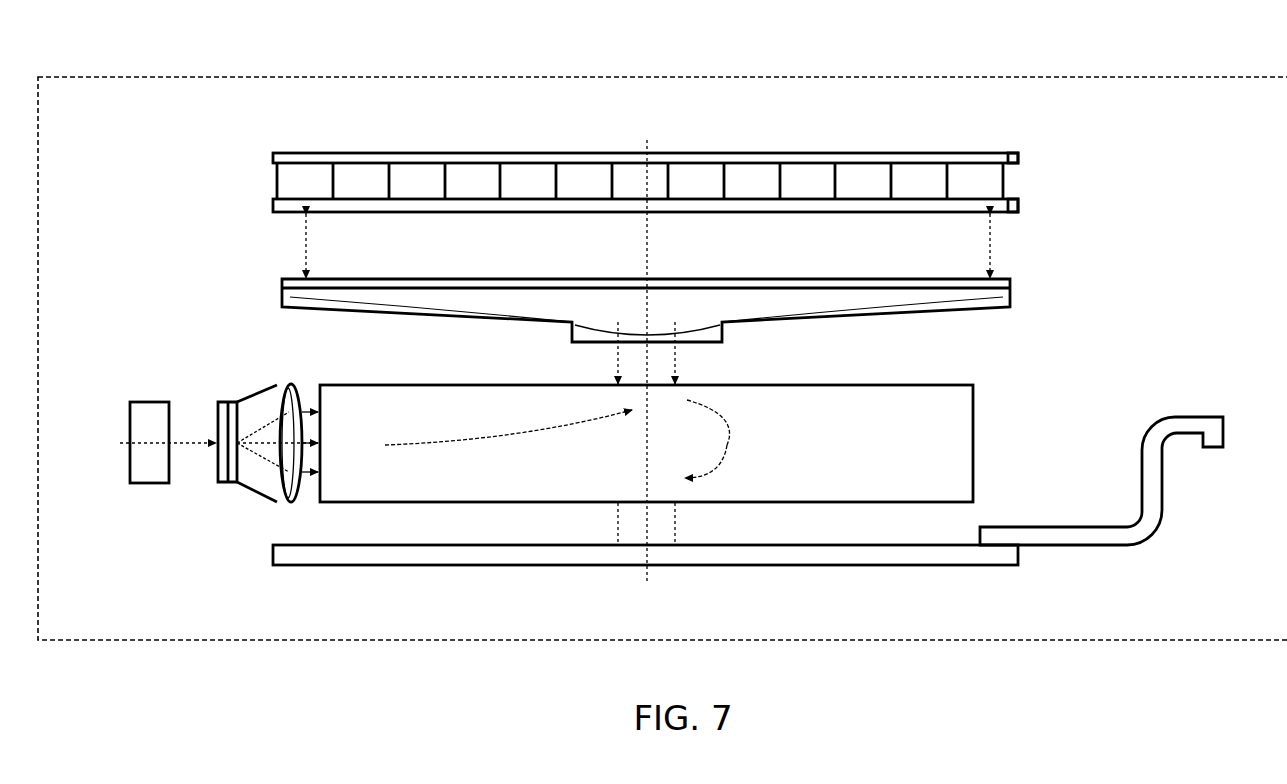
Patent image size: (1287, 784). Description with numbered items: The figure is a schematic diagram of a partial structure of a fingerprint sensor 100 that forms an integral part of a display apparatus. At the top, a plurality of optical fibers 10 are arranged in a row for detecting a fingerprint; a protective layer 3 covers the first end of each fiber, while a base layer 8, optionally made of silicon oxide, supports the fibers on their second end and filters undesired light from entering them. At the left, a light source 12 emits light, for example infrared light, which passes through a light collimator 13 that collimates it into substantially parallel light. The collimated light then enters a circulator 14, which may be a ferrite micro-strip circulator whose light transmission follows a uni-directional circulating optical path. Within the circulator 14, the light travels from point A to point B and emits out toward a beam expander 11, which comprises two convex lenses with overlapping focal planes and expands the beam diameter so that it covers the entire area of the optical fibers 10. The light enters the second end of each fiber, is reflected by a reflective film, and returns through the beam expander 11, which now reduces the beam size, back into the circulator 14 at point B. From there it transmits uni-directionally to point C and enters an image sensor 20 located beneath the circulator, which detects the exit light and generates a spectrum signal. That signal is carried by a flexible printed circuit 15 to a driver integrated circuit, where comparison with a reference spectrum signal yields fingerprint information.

The fingerprint sensor 100 is at (680, 77).
The plurality of optical fibers 10 is at (953, 158).
The protective layer 3 is at (1018, 157).
The base layer 8 is at (1025, 203).
The beam expander 11 is at (338, 303).
The light source 12 is at (155, 458).
The light collimator 13 is at (257, 473).
The circulator 14 is at (766, 472).
The flexible printed circuit 15 is at (1065, 533).
The image sensor 20 is at (407, 555).
The point A is at (490, 435).
The point B is at (693, 421).
The point C is at (692, 466).